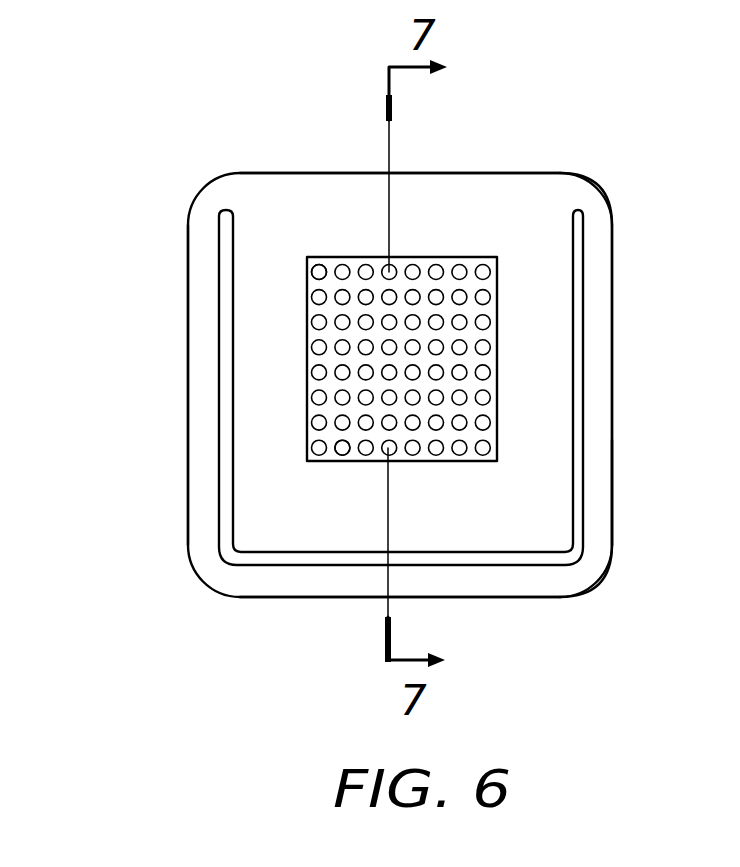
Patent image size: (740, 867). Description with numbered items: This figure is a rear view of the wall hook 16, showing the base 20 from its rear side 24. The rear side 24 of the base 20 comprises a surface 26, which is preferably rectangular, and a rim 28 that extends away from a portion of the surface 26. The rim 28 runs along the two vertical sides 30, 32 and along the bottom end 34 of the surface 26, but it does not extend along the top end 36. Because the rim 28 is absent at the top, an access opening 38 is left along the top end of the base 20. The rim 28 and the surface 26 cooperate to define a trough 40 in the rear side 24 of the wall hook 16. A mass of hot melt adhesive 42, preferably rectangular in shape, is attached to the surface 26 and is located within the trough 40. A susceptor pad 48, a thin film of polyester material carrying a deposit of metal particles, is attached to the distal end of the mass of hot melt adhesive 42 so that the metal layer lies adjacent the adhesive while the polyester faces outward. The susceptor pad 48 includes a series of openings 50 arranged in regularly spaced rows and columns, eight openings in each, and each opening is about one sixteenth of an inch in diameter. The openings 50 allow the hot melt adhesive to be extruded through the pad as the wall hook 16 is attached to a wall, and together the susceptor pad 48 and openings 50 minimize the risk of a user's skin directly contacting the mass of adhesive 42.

The wall hook 16 is at (188, 328).
The base 20 is at (560, 195).
The rear side 24 is at (600, 332).
The surface 26 is at (562, 578).
The rim 28 is at (577, 387).
The vertical side 30 is at (186, 510).
The vertical side 32 is at (612, 480).
The bottom end 34 is at (325, 598).
The top end 36 is at (305, 175).
The access opening 38 is at (468, 198).
The trough 40 is at (532, 483).
The mass of hot melt adhesive 42 is at (315, 424).
The susceptor pad 48 is at (355, 436).
The openings 50 is at (318, 271).